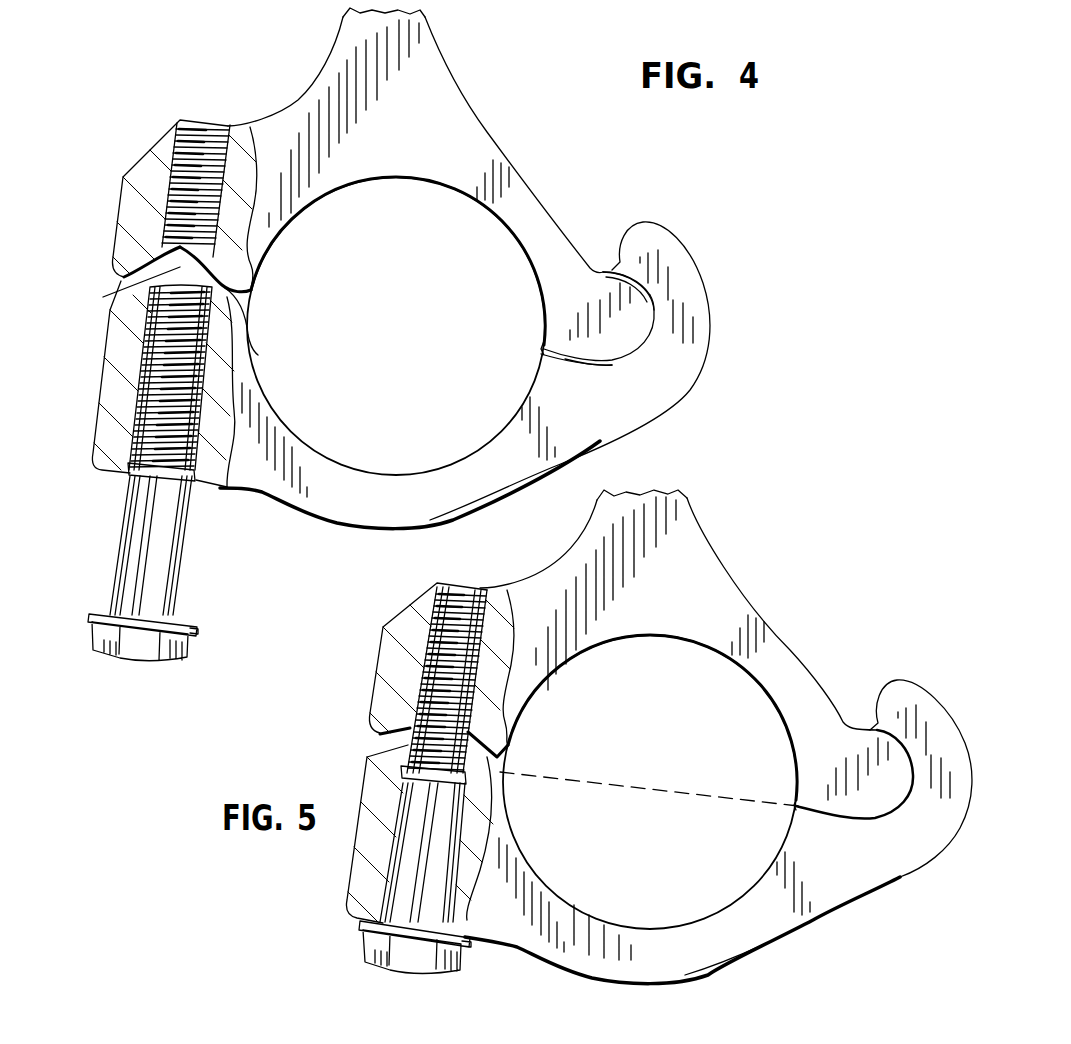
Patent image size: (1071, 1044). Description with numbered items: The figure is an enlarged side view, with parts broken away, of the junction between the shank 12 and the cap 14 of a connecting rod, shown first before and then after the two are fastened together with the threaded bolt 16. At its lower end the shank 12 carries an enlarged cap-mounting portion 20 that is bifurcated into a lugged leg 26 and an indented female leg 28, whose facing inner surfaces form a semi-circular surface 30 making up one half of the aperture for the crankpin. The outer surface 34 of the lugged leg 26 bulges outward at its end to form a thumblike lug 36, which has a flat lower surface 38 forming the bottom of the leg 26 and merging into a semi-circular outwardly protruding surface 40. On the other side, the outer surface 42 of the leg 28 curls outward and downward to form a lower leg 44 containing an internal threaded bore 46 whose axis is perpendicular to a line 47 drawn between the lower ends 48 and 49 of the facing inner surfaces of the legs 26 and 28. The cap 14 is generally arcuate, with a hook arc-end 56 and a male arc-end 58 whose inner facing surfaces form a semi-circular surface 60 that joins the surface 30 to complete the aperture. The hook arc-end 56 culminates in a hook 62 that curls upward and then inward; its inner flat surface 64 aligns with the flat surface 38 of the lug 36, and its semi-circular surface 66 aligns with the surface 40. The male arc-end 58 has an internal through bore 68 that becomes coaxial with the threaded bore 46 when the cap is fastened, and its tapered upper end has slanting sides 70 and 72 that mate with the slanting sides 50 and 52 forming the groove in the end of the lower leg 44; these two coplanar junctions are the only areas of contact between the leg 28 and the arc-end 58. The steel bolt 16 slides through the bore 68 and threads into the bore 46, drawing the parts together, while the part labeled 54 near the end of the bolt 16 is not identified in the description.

In FIG. 4, the shank 12 is at (453, 58).
In FIG. 5, the shank 12 is at (782, 614).
In FIG. 4, the cap 14 is at (297, 512).
In FIG. 5, the cap 14 is at (682, 930).
In FIG. 4, the threaded bolt 16 is at (148, 553).
In FIG. 5, the threaded bolt 16 is at (430, 754).
In FIG. 4, the cap-mounting portion 20 is at (393, 122).
In FIG. 5, the cap-mounting portion 20 is at (642, 495).
In FIG. 4, the lugged leg 26 is at (548, 133).
In FIG. 4, the indented female leg 28 is at (215, 72).
In FIG. 4, the semi-circular surface 30 is at (398, 180).
In FIG. 5, the semi-circular surface 30 is at (652, 717).
In FIG. 4, the outer surface 34 is at (523, 170).
In FIG. 4, the thumblike lug 36 is at (614, 300).
In FIG. 4, the flat lower surface 38 is at (553, 350).
In FIG. 4, the semi-circular outwardly protruding surface 40 is at (651, 300).
In FIG. 5, the semi-circular outwardly protruding surface 40 is at (873, 762).
In FIG. 4, the outer surface 42 is at (292, 100).
In FIG. 5, the outer surface 42 is at (578, 593).
In FIG. 4, the lower leg 44 is at (157, 157).
In FIG. 5, the lower leg 44 is at (441, 664).
In FIG. 4, the internal threaded bore 46 is at (210, 137).
In FIG. 5, the internal threaded bore 46 is at (447, 680).
In FIG. 5, the line 47 is at (637, 780).
In FIG. 4, the lower end 48 is at (540, 347).
In FIG. 5, the lower end 48 is at (794, 806).
In FIG. 4, the lower end 49 is at (257, 290).
In FIG. 5, the lower end 49 is at (499, 758).
In FIG. 4, the slanting side 50 is at (137, 265).
In FIG. 4, the slanting side 52 is at (264, 249).
In FIG. 5, the nut 54 is at (376, 982).
In FIG. 4, the hook arc-end 56 is at (712, 347).
In FIG. 5, the hook arc-end 56 is at (828, 827).
In FIG. 4, the male arc-end 58 is at (103, 477).
In FIG. 5, the male arc-end 58 is at (419, 834).
In FIG. 4, the semi-circular surface 60 is at (394, 473).
In FIG. 5, the semi-circular surface 60 is at (654, 797).
In FIG. 4, the hook 62 is at (700, 293).
In FIG. 4, the flat surface 64 is at (592, 360).
In FIG. 4, the semi-circular surface 66 is at (652, 302).
In FIG. 4, the internal through bore 68 is at (126, 288).
In FIG. 4, the slanting side 70 is at (135, 300).
In FIG. 4, the slanting side 72 is at (254, 322).